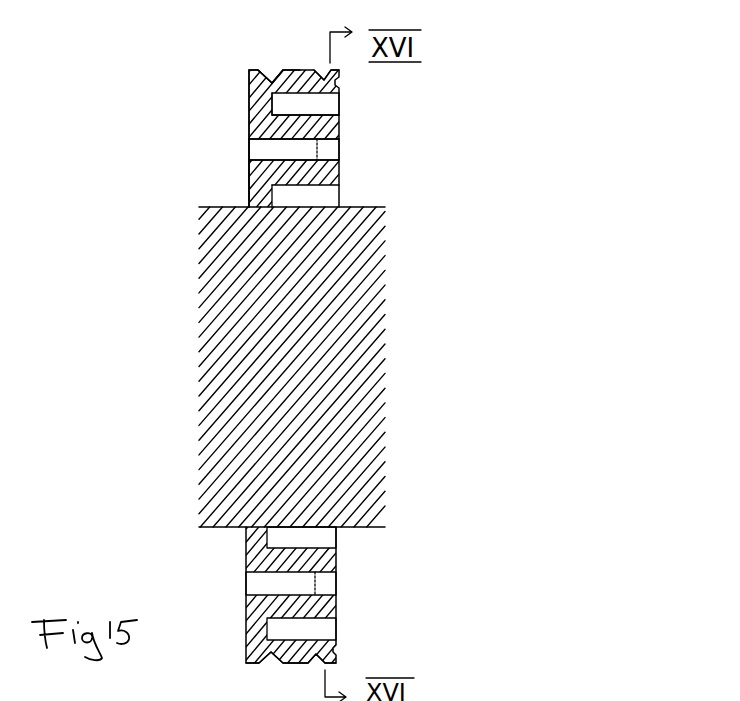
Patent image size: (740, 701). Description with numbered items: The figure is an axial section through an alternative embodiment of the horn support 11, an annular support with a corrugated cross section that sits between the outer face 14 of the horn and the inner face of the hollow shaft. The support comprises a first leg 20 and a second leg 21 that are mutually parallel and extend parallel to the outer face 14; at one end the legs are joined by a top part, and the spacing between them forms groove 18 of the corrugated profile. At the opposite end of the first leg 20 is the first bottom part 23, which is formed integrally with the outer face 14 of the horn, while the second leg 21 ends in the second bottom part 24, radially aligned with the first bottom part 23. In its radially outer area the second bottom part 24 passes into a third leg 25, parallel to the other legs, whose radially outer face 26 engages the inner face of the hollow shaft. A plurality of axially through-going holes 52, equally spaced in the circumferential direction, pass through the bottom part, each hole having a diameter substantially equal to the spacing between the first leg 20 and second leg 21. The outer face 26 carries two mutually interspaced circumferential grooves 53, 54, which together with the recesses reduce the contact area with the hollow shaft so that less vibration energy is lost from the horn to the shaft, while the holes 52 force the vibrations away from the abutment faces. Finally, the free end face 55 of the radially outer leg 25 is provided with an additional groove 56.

The horn support 11 is at (186, 88).
The outer face of the horn 14 is at (366, 207).
The groove 18 is at (330, 100).
The first leg 20 is at (273, 165).
The second leg 21 is at (283, 122).
The first bottom part 23 is at (251, 197).
The second bottom part 24 is at (262, 104).
The third leg 25 is at (265, 67).
The radially outer face 26 is at (251, 69).
The axially through-going holes 52 is at (330, 147).
The circumferential groove 53 is at (318, 67).
The circumferential groove 54 is at (271, 80).
The free end face 55 is at (337, 642).
The additional groove 56 is at (338, 651).